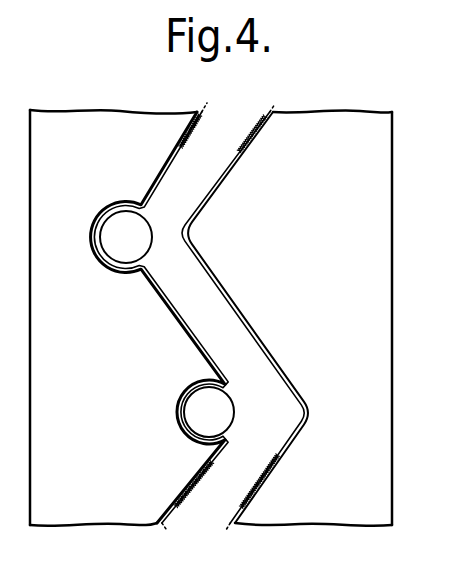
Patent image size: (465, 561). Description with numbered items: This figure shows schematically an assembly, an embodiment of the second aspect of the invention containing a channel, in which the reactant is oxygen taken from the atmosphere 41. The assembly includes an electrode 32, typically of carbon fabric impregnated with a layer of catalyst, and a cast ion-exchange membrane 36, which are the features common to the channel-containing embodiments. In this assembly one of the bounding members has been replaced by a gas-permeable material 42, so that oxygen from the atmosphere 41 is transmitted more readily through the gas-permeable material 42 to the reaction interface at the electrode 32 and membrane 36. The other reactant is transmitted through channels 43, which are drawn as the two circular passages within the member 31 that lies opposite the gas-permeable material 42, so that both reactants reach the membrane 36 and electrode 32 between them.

The first panel section 31 is at (88, 158).
The electrode 32 is at (257, 128).
The cast ion-exchange membrane 36 is at (191, 192).
The atmosphere 41 is at (421, 302).
The gas-permeable material 42 is at (325, 277).
The channels 43 is at (135, 249).